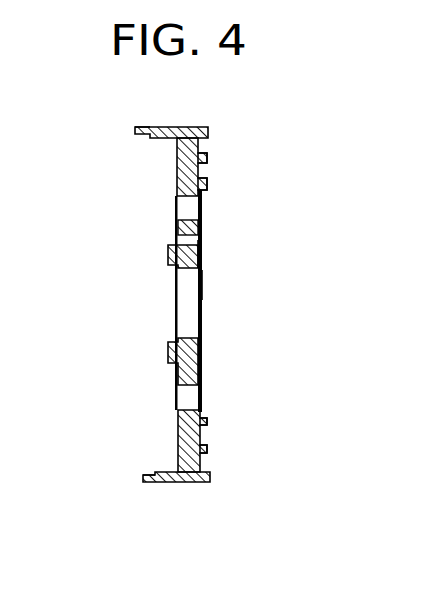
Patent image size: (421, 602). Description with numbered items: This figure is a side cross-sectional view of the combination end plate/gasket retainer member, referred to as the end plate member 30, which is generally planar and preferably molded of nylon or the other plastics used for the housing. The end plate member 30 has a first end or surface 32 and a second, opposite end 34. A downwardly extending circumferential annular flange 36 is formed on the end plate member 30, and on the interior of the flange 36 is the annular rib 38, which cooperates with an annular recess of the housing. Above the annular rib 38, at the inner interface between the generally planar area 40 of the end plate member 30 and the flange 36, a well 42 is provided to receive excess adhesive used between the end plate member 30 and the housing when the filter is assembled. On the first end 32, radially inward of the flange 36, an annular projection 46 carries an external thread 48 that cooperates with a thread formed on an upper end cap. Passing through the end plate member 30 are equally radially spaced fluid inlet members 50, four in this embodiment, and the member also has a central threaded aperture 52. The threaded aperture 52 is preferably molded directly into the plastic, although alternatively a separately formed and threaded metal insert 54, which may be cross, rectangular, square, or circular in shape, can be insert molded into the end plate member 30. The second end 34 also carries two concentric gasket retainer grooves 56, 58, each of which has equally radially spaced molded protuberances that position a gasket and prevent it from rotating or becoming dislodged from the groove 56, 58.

The end plate member 30 is at (68, 132).
The first end 32 is at (178, 435).
The second end 34 is at (203, 356).
The annular flange 36 is at (176, 127).
The annular rib 38 is at (150, 140).
The planar area 40 is at (176, 181).
The well 42 is at (178, 471).
The annular projection 46 is at (169, 258).
The external thread 48 is at (172, 246).
The fluid inlet members 50 is at (198, 199).
The central threaded aperture 52 is at (203, 285).
The metal insert 54 is at (203, 249).
The gasket retainer groove 56 is at (205, 437).
The gasket retainer groove 58 is at (205, 462).